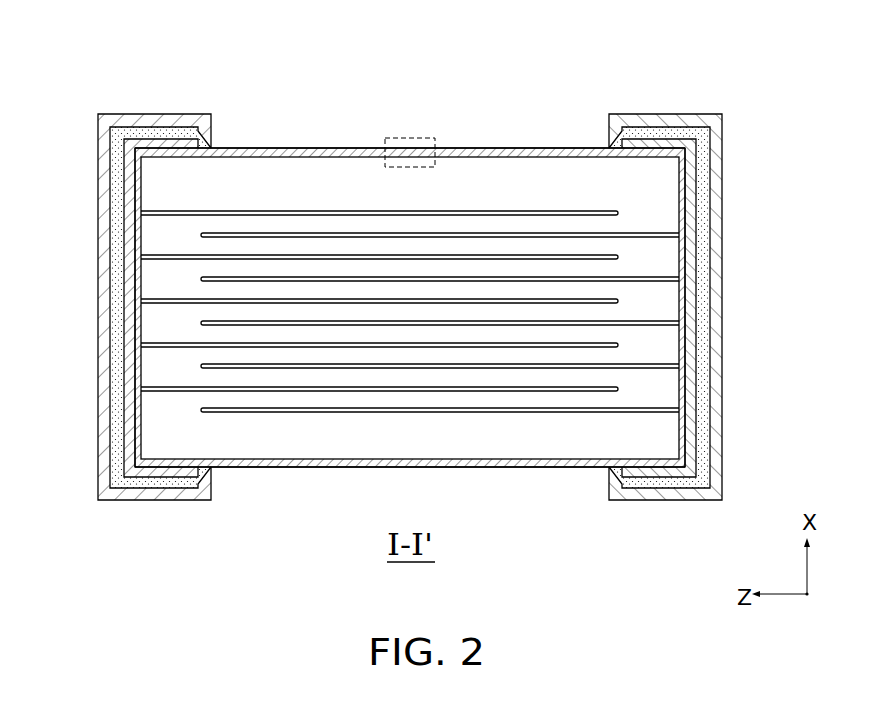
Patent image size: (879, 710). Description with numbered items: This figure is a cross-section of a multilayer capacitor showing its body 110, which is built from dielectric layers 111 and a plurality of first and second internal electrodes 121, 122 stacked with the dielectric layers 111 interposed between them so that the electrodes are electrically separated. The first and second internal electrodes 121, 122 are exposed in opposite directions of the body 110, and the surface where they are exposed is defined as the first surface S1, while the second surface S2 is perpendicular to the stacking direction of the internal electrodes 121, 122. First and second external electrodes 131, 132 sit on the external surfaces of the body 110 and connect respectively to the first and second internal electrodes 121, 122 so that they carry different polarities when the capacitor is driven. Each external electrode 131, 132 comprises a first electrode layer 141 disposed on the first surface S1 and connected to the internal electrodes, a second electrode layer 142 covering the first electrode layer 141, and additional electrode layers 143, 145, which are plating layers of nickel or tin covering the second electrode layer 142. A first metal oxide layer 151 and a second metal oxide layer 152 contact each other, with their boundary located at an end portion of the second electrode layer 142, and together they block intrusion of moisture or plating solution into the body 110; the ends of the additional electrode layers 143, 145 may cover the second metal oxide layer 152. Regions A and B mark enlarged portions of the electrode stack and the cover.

The body 110 is at (411, 296).
The dielectric layer 111 is at (567, 228).
The first internal electrode 121 is at (315, 170).
The second internal electrode 122 is at (525, 233).
The first external electrode 131 is at (120, 270).
The second external electrode 132 is at (700, 270).
The first electrode layer 141 is at (130, 398).
The second electrode layer 142 is at (110, 462).
The additional electrode layer 143 is at (105, 483).
The additional electrode layer 145 is at (720, 483).
The first metal oxide layer 151 is at (118, 428).
The second metal oxide layer 152 is at (360, 150).
The first surface S1 is at (135, 358).
The second surface S2 is at (263, 150).
The region A is at (115, 303).
The region B is at (413, 138).